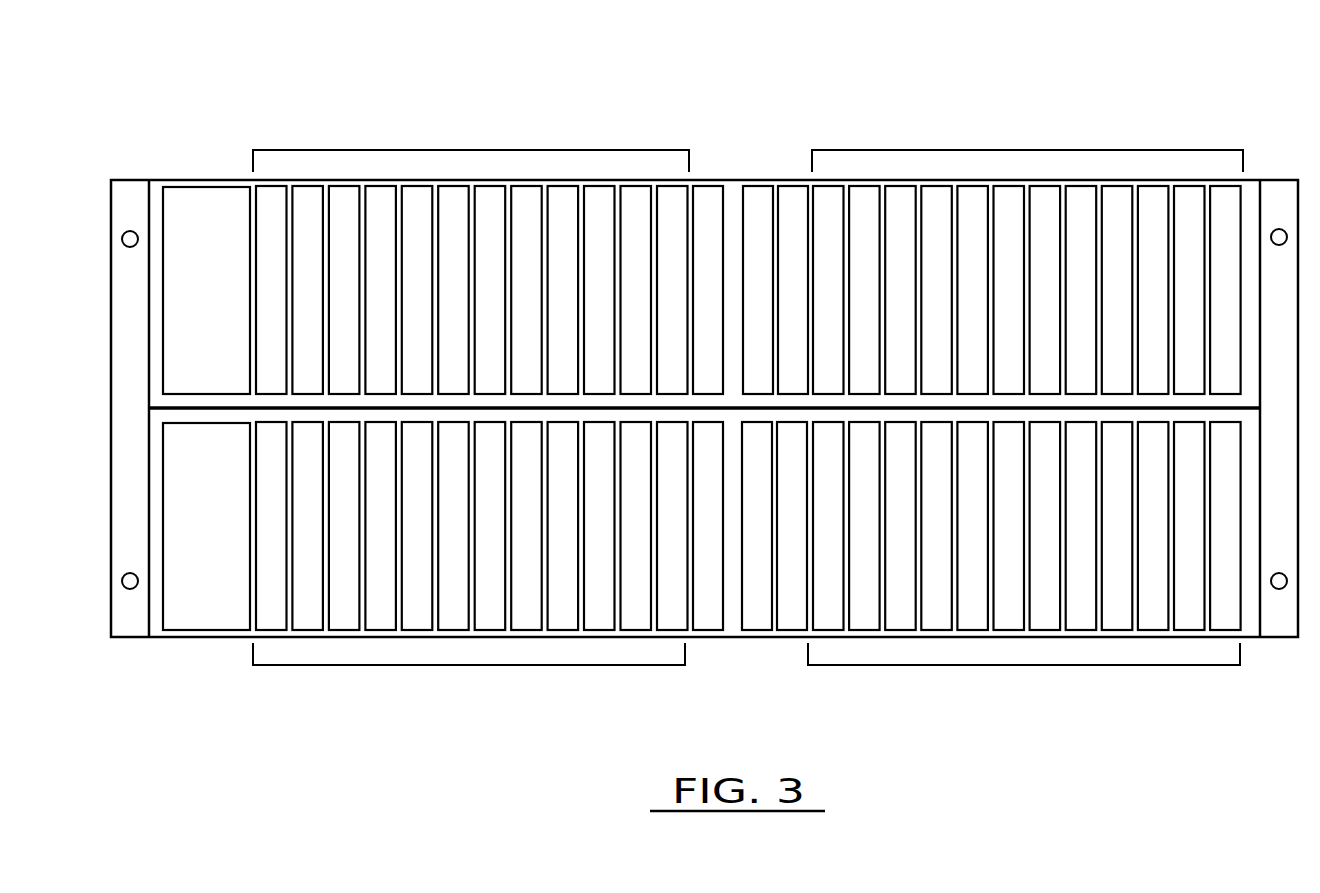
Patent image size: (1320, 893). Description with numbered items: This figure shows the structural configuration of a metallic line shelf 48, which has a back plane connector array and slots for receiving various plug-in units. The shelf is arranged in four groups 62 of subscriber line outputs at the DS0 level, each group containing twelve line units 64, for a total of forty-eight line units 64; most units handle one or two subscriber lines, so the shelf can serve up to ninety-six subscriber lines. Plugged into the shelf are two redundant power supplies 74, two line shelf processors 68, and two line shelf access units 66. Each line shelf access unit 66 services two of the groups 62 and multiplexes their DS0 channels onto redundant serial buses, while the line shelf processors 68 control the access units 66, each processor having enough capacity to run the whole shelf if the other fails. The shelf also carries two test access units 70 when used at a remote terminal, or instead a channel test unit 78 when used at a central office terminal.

The line shelf 48 is at (764, 88).
The groups of subscriber line outputs 62 is at (510, 116).
The line units 64 is at (342, 630).
The line shelf access units 66 is at (756, 185).
The line shelf processors 68 is at (705, 185).
The test access units 70 is at (793, 185).
The channel test unit 78 is at (788, 630).
The redundant power supplies 74 is at (226, 342).